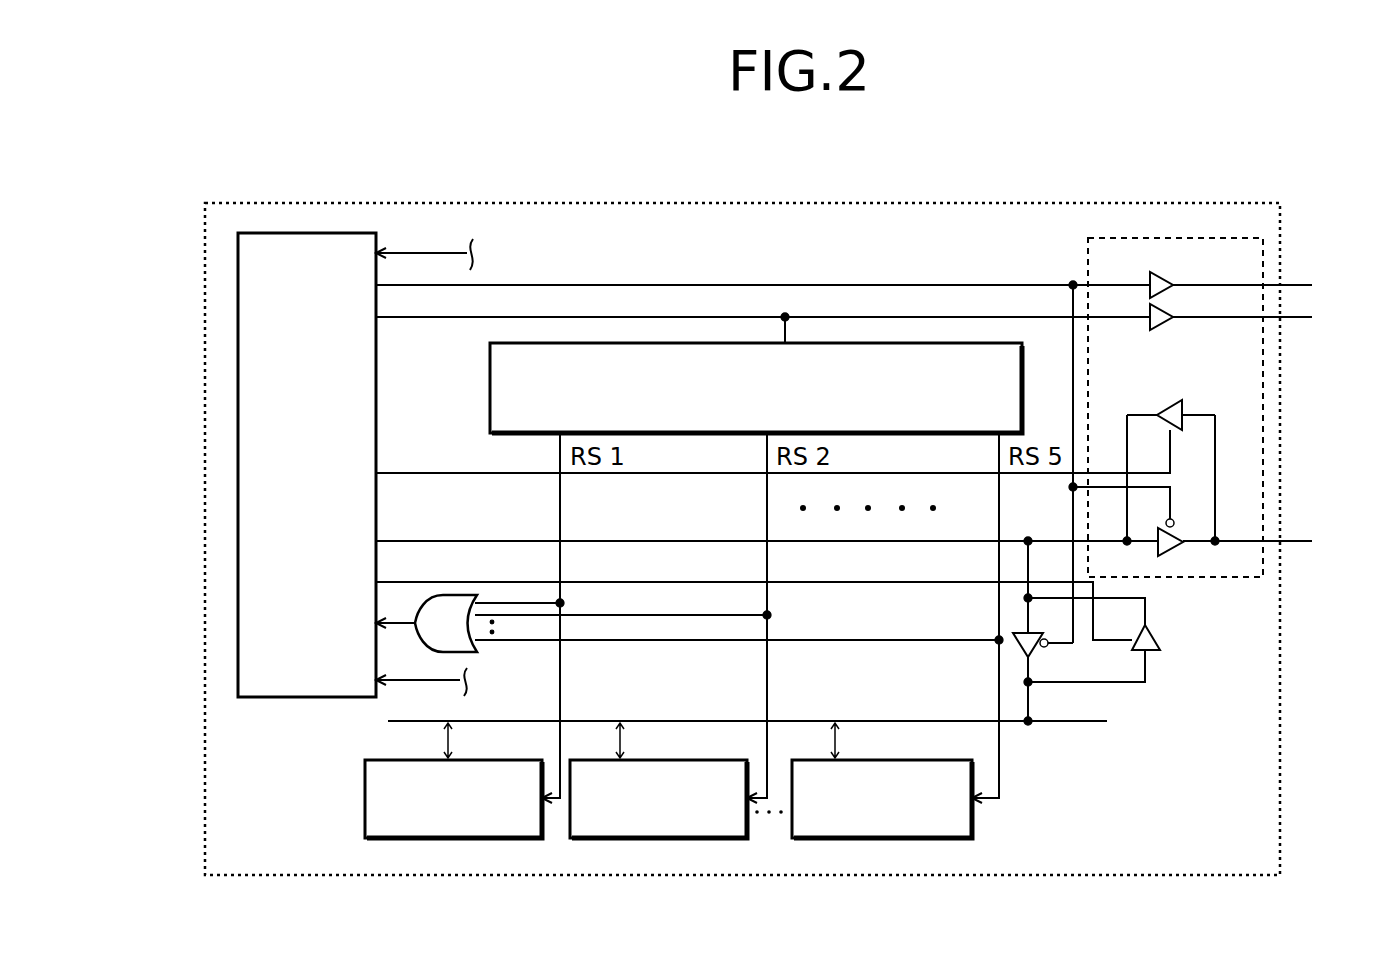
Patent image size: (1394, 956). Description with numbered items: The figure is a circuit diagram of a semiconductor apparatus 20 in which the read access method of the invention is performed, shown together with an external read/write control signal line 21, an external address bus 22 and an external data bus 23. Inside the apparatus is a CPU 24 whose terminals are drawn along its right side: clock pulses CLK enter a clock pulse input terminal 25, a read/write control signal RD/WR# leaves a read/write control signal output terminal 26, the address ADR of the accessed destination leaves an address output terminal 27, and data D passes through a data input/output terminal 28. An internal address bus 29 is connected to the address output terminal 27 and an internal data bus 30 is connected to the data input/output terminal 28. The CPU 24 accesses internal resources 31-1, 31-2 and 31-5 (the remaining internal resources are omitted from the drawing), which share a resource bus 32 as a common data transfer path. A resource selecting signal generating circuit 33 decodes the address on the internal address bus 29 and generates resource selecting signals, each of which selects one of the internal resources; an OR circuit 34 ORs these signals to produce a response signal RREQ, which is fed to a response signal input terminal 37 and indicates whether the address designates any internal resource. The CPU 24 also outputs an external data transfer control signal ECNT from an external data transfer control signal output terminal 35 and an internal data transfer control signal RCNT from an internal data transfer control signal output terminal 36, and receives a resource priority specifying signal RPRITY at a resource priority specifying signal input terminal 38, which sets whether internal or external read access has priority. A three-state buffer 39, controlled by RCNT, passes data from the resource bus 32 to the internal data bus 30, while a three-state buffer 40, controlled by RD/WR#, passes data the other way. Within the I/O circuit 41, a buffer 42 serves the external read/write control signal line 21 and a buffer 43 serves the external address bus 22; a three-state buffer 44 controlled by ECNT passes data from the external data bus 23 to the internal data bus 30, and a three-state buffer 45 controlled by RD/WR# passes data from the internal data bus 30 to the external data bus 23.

The semiconductor apparatus 20 is at (255, 203).
The external read/write control signal line 21 is at (1292, 284).
The external address bus 22 is at (1292, 316).
The external data bus 23 is at (1292, 542).
The CPU 24 is at (308, 697).
The clock pulse input terminal 25 is at (380, 243).
The read/write control signal output terminal 26 is at (378, 288).
The address output terminal 27 is at (378, 320).
The data input/output terminal 28 is at (378, 539).
The internal address bus 29 is at (815, 316).
The internal data bus 30 is at (578, 540).
The internal resource 31-1 is at (395, 840).
The internal resource 31-2 is at (615, 840).
The internal resource 31-5 is at (972, 822).
The resource bus 32 is at (1070, 721).
The resource selecting signal generating circuit 33 is at (1024, 400).
The OR circuit 34 is at (470, 653).
The external data transfer control signal output terminal 35 is at (378, 471).
The internal data transfer control signal output terminal 36 is at (378, 580).
The response signal input terminal 37 is at (378, 627).
The resource priority specifying signal input terminal 38 is at (378, 684).
The three-state buffer 39 is at (1162, 641).
The three-state buffer 40 is at (1040, 651).
The input/output buffer block 41 is at (1105, 238).
The buffer 42 is at (1163, 270).
The buffer 43 is at (1163, 302).
The three-state buffer 44 is at (1168, 400).
The three-state buffer 45 is at (1172, 556).